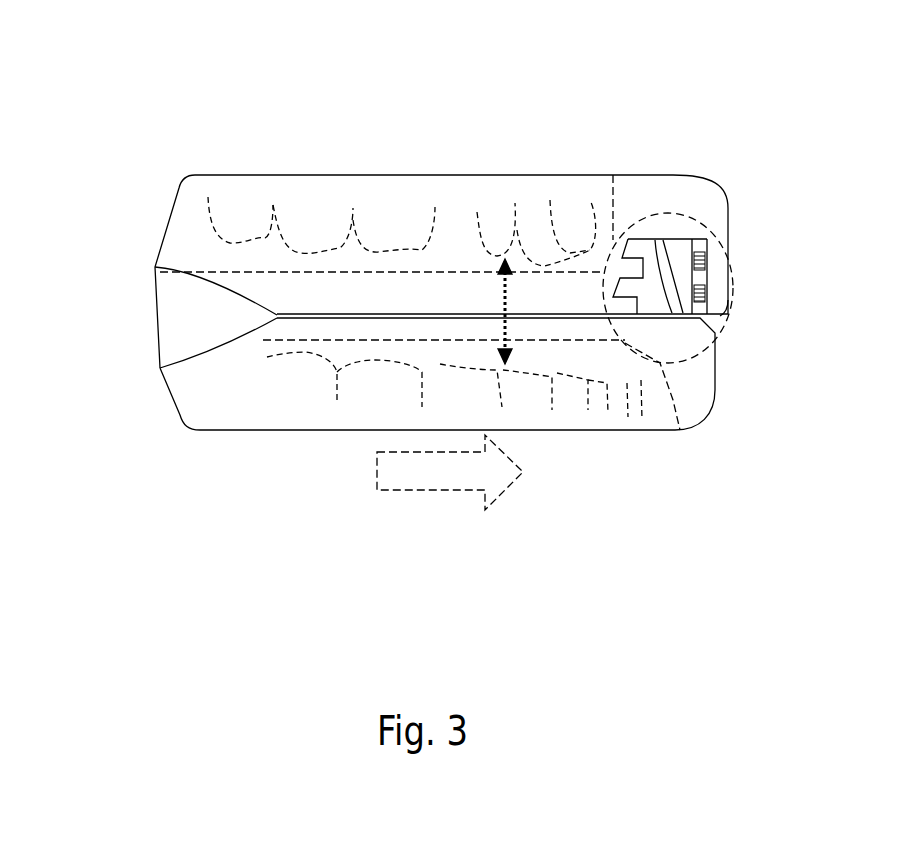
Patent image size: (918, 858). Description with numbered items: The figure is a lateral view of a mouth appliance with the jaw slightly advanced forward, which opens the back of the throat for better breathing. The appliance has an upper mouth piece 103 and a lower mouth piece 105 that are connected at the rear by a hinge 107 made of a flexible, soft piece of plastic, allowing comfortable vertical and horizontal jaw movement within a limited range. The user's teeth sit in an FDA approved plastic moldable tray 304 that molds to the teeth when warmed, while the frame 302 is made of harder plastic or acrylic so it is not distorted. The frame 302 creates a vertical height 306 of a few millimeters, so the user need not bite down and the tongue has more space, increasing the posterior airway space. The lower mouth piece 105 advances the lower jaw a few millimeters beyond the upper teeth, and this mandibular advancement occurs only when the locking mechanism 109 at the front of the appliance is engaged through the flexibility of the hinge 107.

The upper mouth piece 103 is at (174, 163).
The lower mouth piece 105 is at (176, 420).
The hinge 107 is at (181, 327).
The locking mechanism 109 is at (722, 227).
The frame 302 is at (637, 174).
The moldable tray 304 is at (565, 191).
The vertical height 306 is at (488, 289).